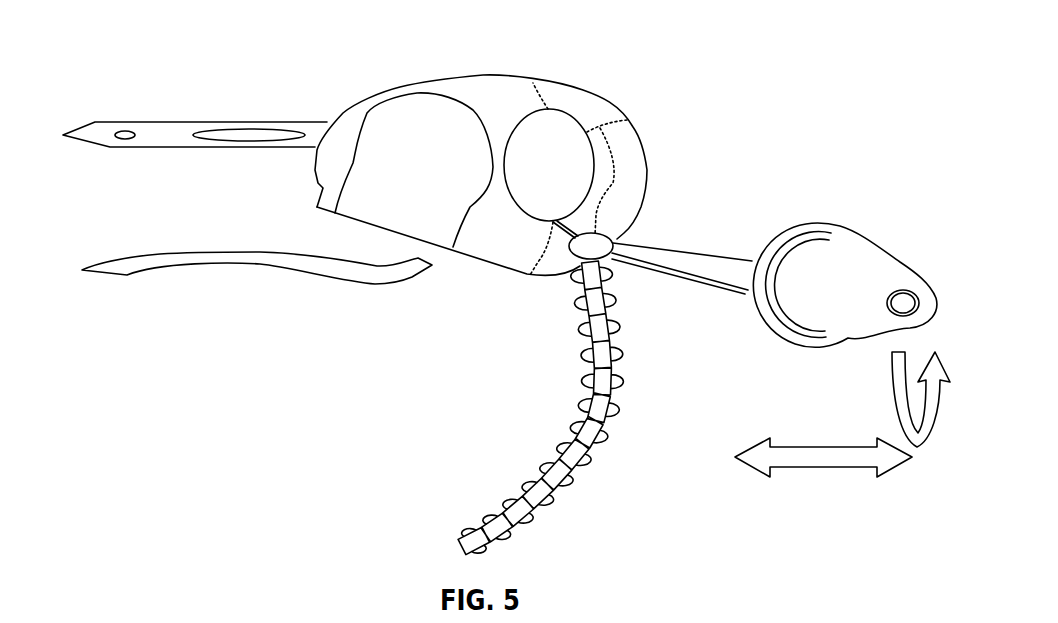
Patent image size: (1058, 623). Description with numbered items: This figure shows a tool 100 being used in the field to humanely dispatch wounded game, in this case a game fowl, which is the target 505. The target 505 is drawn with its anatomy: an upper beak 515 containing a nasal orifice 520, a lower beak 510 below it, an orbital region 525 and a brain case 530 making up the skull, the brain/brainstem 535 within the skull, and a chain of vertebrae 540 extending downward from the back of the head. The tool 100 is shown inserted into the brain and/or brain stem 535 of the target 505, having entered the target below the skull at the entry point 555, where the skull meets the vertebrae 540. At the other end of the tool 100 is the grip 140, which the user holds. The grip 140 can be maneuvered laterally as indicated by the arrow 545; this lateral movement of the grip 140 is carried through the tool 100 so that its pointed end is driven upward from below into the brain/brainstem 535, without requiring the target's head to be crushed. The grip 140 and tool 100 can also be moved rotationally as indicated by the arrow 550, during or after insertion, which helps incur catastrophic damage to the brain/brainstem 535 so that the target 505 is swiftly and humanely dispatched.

The tool 100 is at (837, 83).
The grip 140 is at (860, 243).
The target 505 is at (353, 34).
The lower beak 510 is at (238, 282).
The upper beak 515 is at (100, 125).
The nasal orifice 520 is at (230, 128).
The orbital region 525 is at (393, 110).
The brain case 530 is at (553, 90).
The brain/brainstem 535 is at (595, 127).
The vertebrae 540 is at (528, 443).
The arrow (lateral movement) 545 is at (823, 468).
The arrow (rotational movement) 550 is at (893, 390).
The entry point below the skull 555 is at (620, 242).